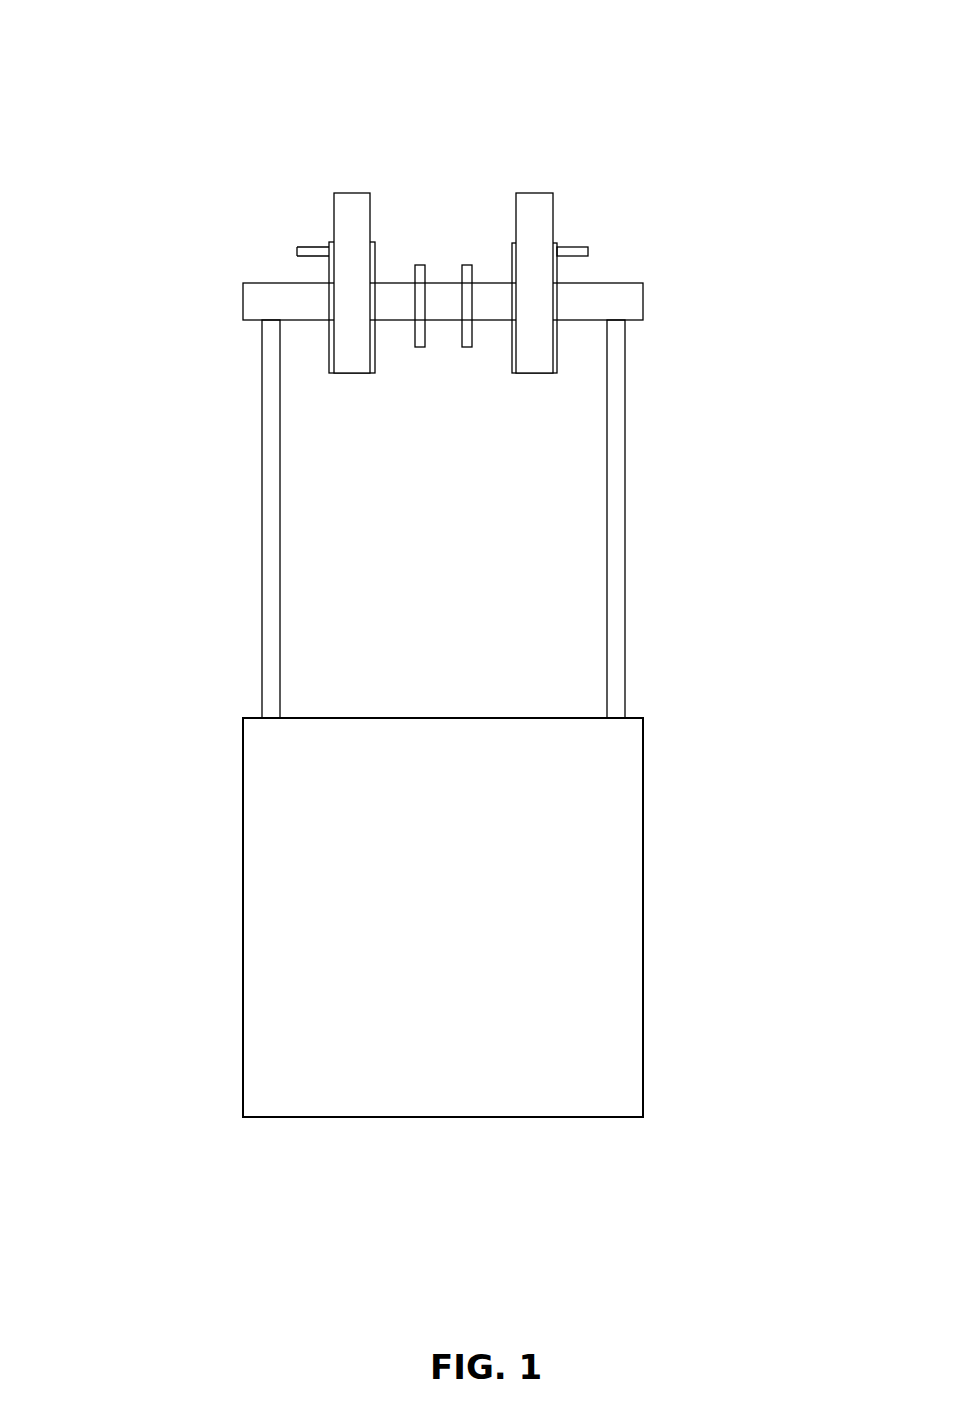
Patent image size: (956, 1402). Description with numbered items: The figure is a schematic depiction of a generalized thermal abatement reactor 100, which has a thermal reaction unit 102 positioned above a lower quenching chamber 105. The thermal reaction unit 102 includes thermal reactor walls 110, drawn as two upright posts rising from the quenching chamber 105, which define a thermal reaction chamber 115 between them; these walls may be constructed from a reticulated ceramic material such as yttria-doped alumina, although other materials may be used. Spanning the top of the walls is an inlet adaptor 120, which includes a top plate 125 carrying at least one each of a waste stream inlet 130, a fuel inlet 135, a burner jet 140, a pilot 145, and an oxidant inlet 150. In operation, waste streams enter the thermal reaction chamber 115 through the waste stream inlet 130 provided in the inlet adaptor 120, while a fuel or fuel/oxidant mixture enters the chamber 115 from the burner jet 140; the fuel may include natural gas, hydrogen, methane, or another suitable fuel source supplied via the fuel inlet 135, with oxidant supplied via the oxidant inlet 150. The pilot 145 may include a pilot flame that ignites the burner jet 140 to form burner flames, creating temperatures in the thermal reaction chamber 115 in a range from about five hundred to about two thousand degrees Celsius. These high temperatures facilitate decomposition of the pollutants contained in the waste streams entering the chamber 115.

The thermal abatement reactor 100 is at (516, 98).
The thermal reaction unit 102 is at (446, 500).
The lower quenching chamber 105 is at (243, 990).
The thermal reactor walls 110 is at (281, 637).
The thermal reaction chamber 115 is at (466, 511).
The inlet adaptor 120 is at (399, 293).
The top plate 125 is at (645, 310).
The waste stream inlet 130 is at (553, 218).
The fuel inlet 135 is at (578, 247).
The burner jet 140 is at (329, 357).
The pilot 145 is at (423, 347).
The oxidant inlet 150 is at (468, 347).